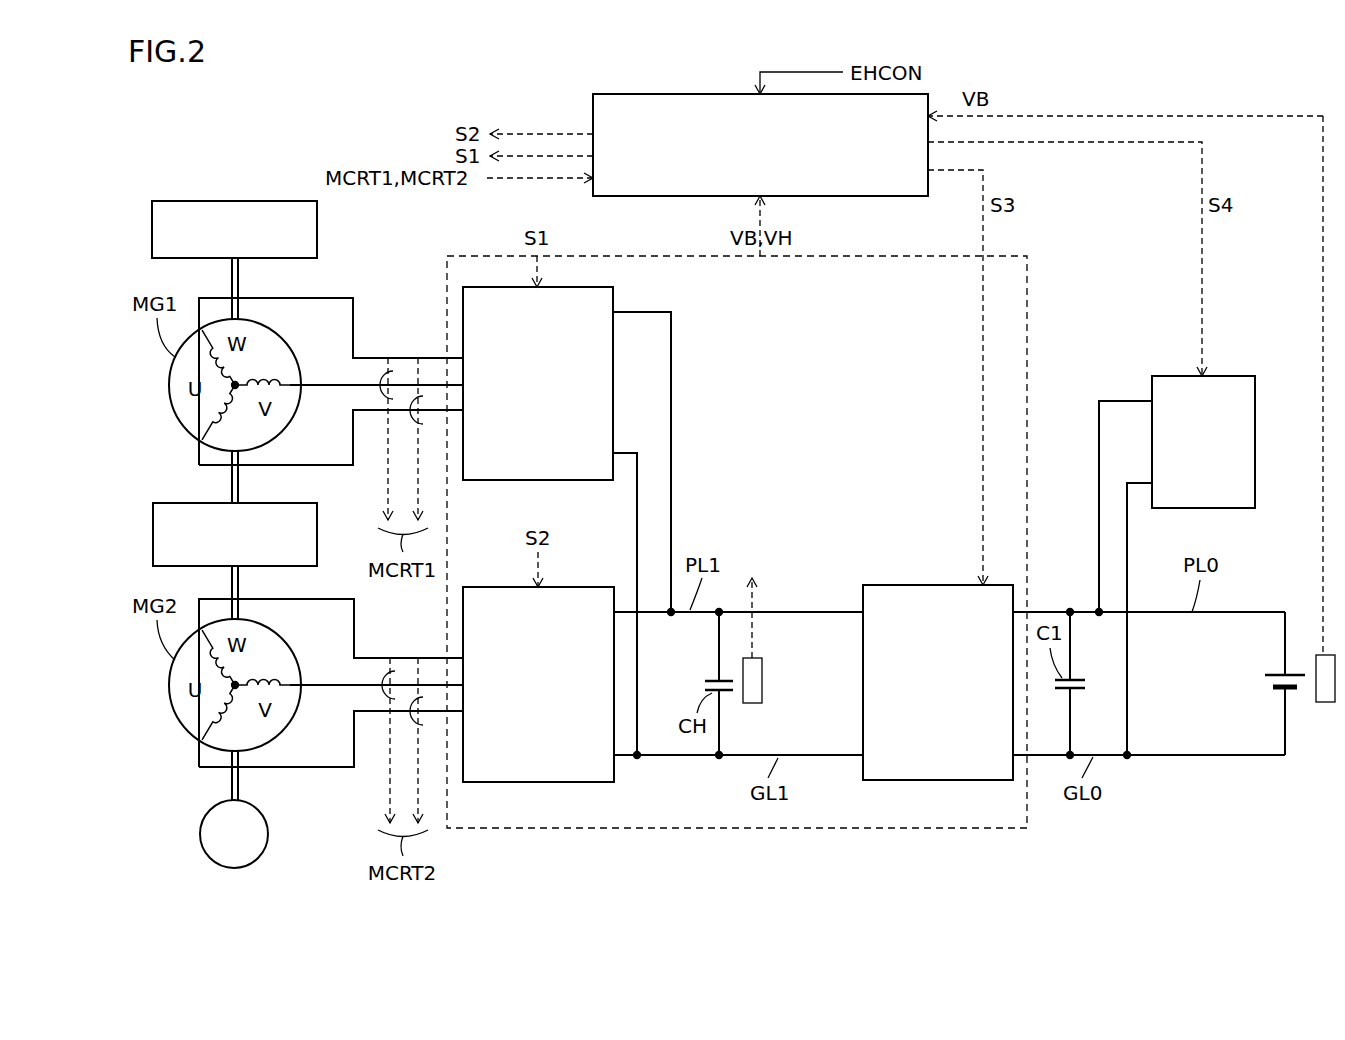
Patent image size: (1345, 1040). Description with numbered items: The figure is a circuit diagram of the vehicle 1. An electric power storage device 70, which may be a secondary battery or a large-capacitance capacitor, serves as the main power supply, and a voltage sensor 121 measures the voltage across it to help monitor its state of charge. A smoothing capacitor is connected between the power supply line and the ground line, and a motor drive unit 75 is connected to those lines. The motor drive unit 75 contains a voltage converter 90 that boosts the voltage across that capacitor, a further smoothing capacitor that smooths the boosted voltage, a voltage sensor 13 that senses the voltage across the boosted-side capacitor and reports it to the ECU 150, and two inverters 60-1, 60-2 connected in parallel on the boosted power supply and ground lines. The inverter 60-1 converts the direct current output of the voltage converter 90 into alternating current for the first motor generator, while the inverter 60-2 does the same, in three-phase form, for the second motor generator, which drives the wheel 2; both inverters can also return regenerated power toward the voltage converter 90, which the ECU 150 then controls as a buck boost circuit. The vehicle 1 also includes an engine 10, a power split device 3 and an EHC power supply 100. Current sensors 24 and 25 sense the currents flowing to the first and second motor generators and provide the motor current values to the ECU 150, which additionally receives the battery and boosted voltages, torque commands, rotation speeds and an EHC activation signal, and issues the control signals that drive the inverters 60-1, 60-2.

The vehicle 1 is at (1121, 78).
The wheel 2 is at (268, 836).
The power split device 3 is at (275, 503).
The engine 10 is at (257, 201).
The voltage sensor 13 is at (753, 703).
The current sensor 24 is at (406, 422).
The current sensor 25 is at (408, 724).
The inverter 60-1 is at (613, 295).
The inverter 60-2 is at (614, 775).
The electric power storage device 70 is at (1290, 675).
The motor drive unit 75 is at (1027, 293).
The voltage converter 90 is at (870, 585).
The EHC power supply 100 is at (1233, 376).
The voltage sensor 121 is at (1323, 702).
The ECU 150 is at (658, 94).